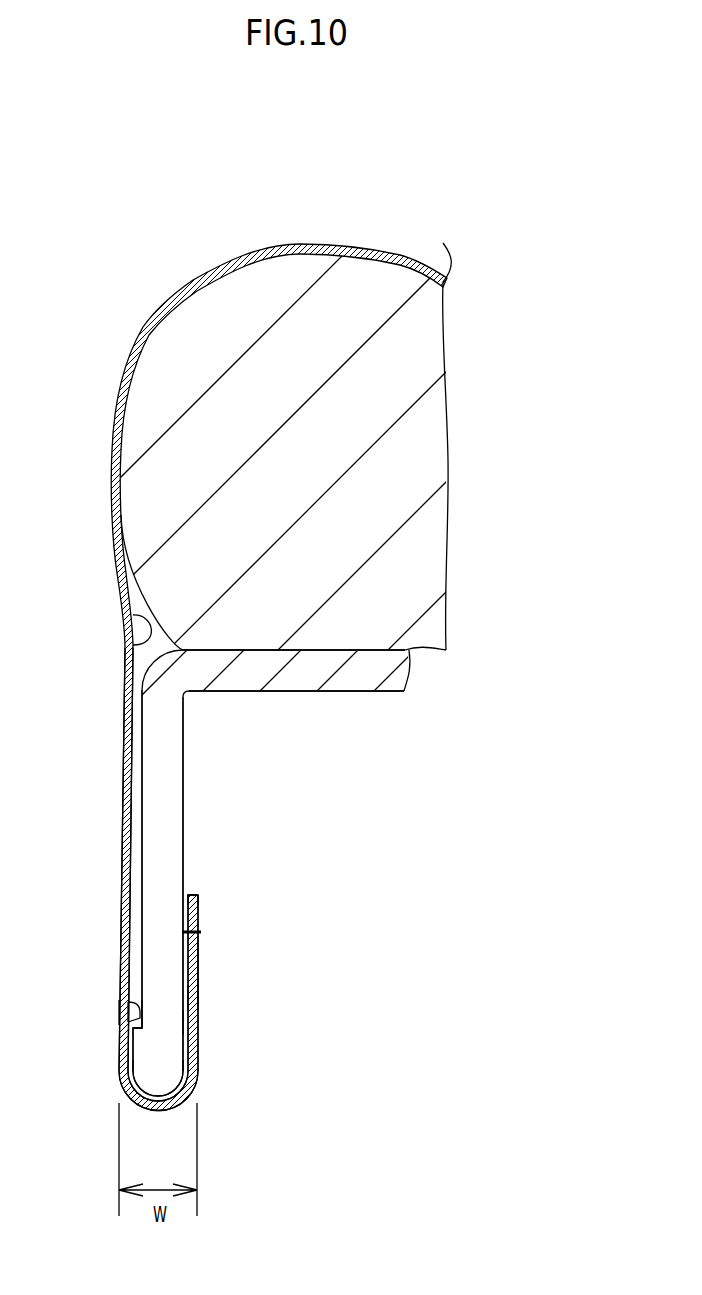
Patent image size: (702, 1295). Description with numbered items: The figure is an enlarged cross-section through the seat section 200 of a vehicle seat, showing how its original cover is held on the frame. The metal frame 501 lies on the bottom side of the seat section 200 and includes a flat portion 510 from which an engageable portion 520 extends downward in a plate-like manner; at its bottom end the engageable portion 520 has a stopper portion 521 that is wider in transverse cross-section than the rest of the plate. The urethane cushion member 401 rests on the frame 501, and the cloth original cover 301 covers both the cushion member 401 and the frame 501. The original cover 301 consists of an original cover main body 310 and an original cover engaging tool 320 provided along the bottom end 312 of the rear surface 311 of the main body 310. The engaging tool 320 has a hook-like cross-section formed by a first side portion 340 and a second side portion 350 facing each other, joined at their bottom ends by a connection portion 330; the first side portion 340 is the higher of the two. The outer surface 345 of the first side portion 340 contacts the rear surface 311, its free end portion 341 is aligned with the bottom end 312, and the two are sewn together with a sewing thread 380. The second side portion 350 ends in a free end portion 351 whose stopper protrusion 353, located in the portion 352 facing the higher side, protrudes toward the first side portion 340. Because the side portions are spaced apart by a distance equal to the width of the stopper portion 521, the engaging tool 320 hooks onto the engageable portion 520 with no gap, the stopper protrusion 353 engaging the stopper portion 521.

The seat section 200 is at (525, 418).
The original cover 301 is at (127, 690).
The original cover main body 310 is at (125, 735).
The rear surface 311 is at (127, 613).
The bottom end 312 is at (197, 897).
The original cover engaging tool 320 is at (187, 1022).
The connection portion 330 is at (162, 1105).
The first side portion 340 is at (190, 997).
The free end portion 341 is at (186, 895).
The outer surface 345 is at (198, 974).
The second side portion 350 is at (132, 1057).
The free end portion 351 is at (125, 1003).
The portion facing the higher portion 352 is at (134, 1035).
The stopper protrusion 353 is at (122, 1012).
The sewing thread 380 is at (200, 918).
The cushion member 401 is at (418, 357).
The frame 501 is at (267, 691).
The flat portion 510 is at (303, 691).
The engageable portion 520 is at (185, 795).
The stopper portion 521 is at (184, 1068).